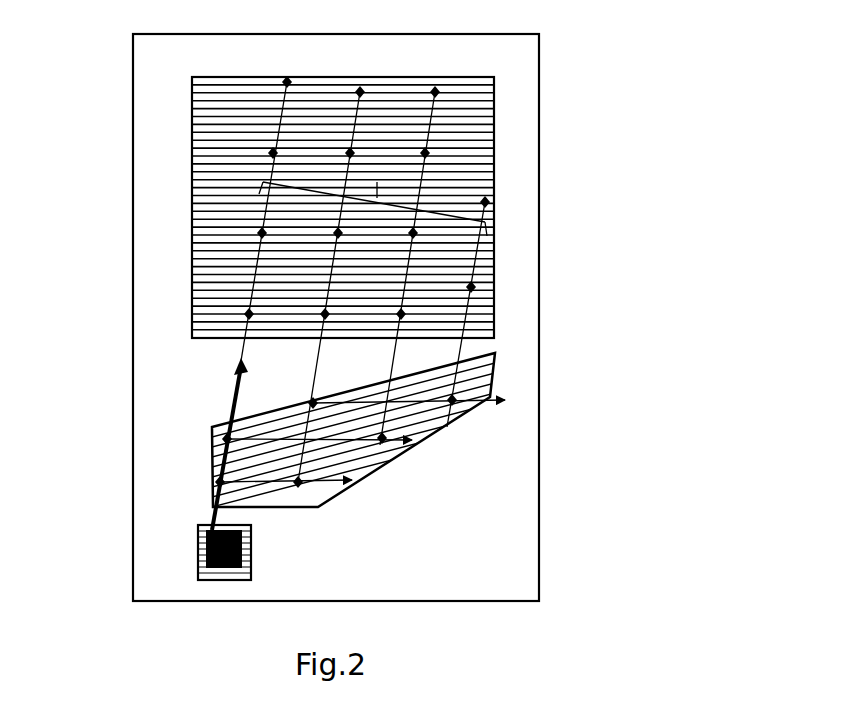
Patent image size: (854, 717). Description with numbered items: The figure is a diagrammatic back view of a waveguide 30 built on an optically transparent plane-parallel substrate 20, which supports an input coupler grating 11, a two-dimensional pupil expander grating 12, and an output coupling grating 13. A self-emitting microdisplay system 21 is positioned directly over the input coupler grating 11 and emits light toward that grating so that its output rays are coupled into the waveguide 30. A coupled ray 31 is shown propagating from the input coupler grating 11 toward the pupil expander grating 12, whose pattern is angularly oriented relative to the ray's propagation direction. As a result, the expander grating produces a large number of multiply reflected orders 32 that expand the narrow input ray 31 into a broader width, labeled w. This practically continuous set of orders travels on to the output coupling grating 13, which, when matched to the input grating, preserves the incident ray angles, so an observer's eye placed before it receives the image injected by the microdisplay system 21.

The optically transparent plane-parallel substrate 20 is at (160, 53).
The output coupling grating 13 is at (477, 125).
The 2D pupil expander grating 12 is at (495, 373).
The input coupler grating 11 is at (198, 540).
The self-emitting microdisplay system 21 is at (242, 545).
The waveguide 30 is at (612, 263).
The ray 31 is at (237, 380).
The multiply reflected orders 32 is at (340, 484).